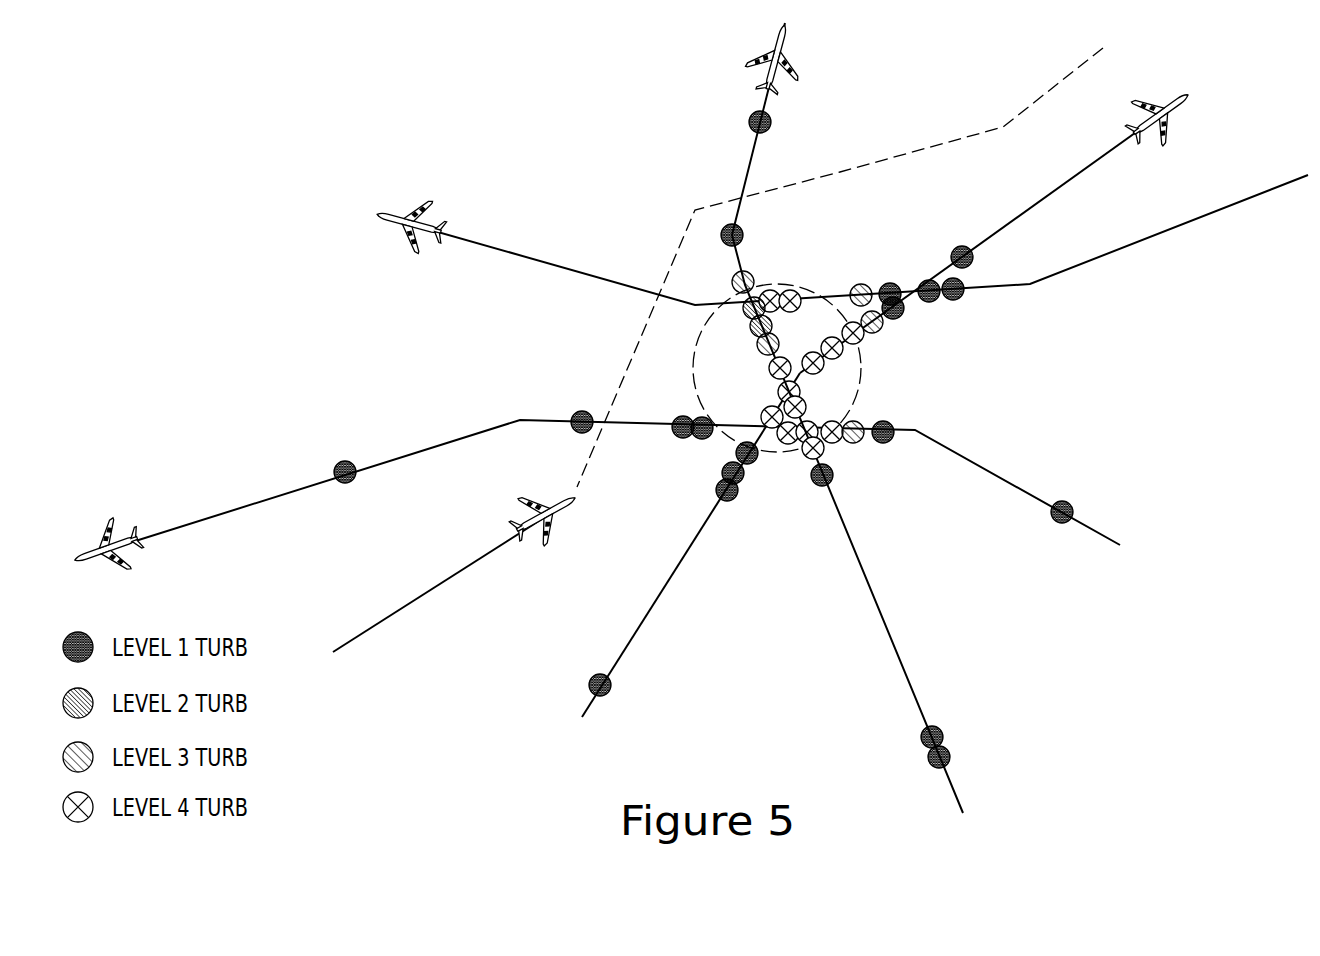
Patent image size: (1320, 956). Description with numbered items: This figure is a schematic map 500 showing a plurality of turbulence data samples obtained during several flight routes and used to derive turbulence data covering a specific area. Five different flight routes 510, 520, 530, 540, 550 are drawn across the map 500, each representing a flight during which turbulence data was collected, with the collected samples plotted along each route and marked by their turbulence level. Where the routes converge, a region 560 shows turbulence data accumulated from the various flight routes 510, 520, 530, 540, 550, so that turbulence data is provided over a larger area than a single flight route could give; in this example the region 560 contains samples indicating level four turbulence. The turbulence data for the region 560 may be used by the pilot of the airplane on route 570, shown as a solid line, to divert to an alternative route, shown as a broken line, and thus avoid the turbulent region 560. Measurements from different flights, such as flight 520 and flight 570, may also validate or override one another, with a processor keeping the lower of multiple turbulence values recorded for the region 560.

The map 500 is at (545, 117).
The flight route 510 is at (220, 511).
The flight route 520 is at (1050, 193).
The flight route 530 is at (1263, 192).
The flight route 540 is at (910, 690).
The flight route 550 is at (662, 587).
The region 560 is at (698, 368).
The route 570 is at (410, 599).